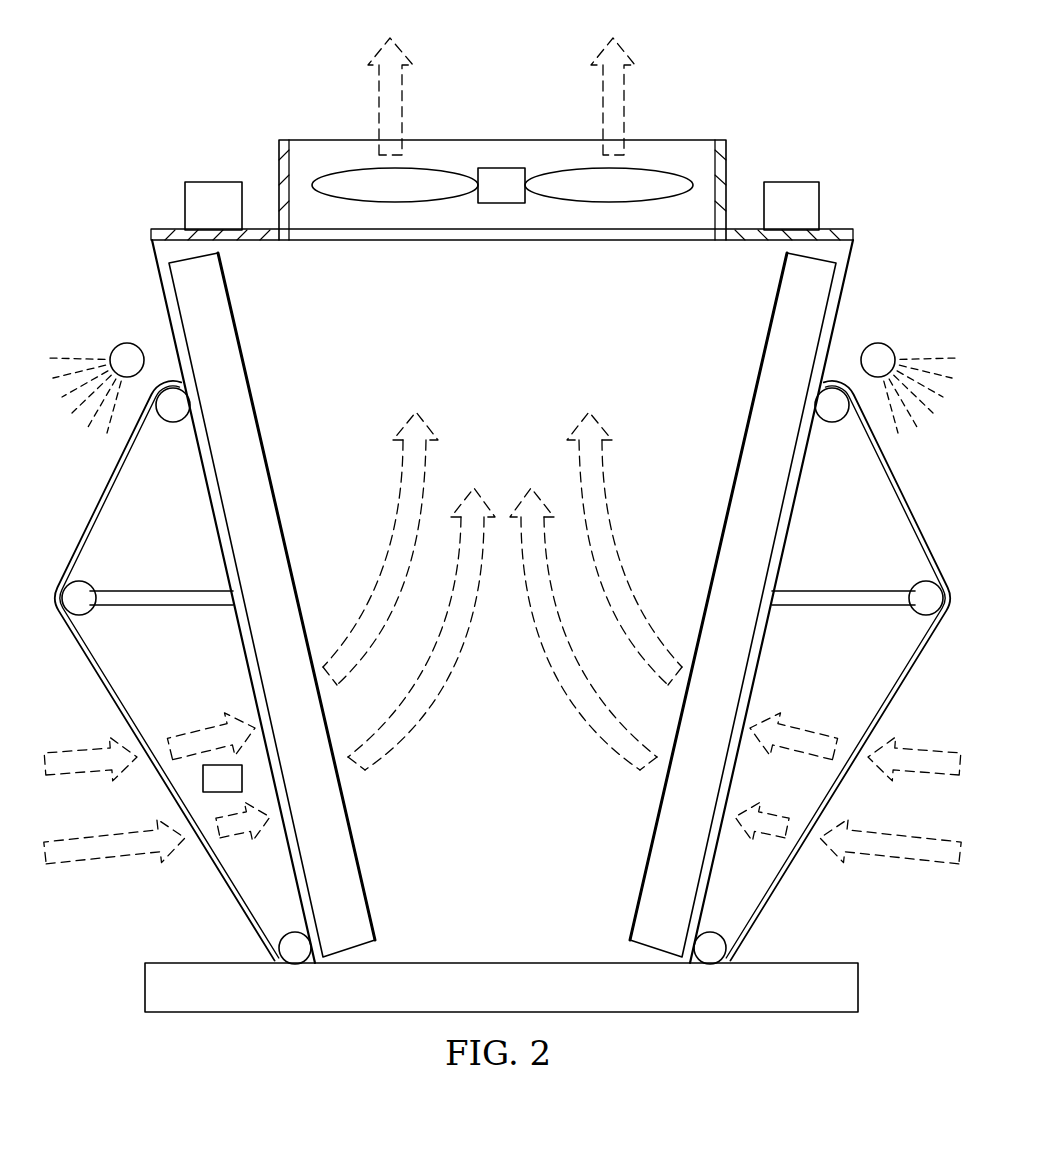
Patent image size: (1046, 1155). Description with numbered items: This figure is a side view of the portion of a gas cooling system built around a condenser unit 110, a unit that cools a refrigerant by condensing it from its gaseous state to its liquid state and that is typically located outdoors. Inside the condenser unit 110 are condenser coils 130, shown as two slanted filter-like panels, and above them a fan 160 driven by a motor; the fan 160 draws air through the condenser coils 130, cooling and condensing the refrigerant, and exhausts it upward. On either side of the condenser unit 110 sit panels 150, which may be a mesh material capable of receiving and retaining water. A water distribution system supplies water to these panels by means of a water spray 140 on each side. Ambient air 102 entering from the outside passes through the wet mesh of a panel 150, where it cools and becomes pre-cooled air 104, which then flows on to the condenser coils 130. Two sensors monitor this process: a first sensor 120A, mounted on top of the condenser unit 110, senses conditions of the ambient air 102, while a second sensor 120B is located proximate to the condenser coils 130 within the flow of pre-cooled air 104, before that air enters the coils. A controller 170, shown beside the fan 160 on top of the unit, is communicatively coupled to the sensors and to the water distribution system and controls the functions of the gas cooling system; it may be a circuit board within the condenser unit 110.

The ambient air 102 is at (105, 862).
The pre-cooled air 104 is at (195, 733).
The condenser unit 110 is at (848, 229).
The first sensor 120A is at (210, 182).
The second sensor 120B is at (203, 777).
The condenser coils 130 is at (285, 548).
The water spray 140 is at (78, 346).
The panel 150 is at (110, 478).
The fan 160 is at (645, 168).
The controller 170 is at (790, 182).